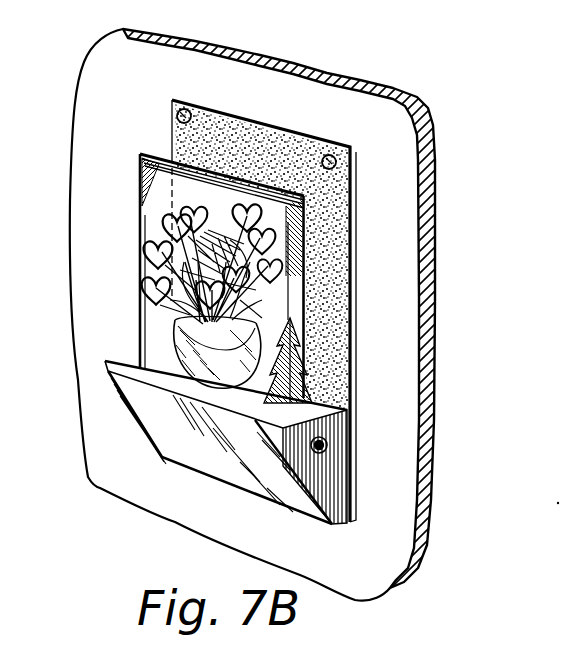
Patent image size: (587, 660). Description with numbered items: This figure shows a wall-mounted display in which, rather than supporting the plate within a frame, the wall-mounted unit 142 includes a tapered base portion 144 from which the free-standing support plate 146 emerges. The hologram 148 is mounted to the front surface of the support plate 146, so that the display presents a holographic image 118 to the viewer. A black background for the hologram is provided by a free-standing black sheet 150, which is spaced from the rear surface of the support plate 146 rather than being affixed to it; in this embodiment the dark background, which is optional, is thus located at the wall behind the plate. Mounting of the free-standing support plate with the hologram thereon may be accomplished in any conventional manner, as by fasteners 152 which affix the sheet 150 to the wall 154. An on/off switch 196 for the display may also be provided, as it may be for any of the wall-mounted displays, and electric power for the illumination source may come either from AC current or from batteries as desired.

The wall-mounted unit 142 is at (392, 266).
The free-standing black sheet 150 is at (233, 120).
The fasteners 152 is at (191, 105).
The free-standing support plate 146 is at (145, 153).
The hologram 148 is at (157, 195).
The holographic image 118 is at (160, 328).
The tapered base portion 144 is at (327, 476).
The on/off switch 196 is at (338, 447).
The wall 154 is at (366, 565).